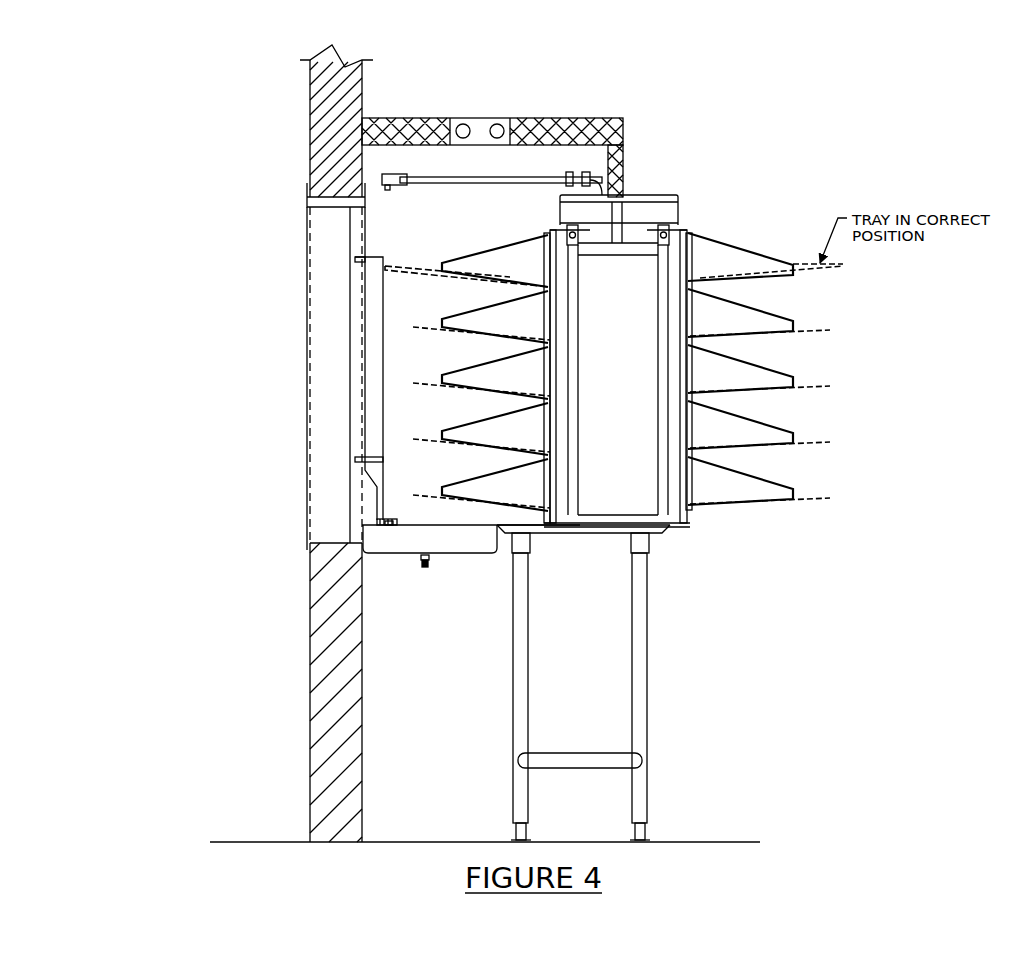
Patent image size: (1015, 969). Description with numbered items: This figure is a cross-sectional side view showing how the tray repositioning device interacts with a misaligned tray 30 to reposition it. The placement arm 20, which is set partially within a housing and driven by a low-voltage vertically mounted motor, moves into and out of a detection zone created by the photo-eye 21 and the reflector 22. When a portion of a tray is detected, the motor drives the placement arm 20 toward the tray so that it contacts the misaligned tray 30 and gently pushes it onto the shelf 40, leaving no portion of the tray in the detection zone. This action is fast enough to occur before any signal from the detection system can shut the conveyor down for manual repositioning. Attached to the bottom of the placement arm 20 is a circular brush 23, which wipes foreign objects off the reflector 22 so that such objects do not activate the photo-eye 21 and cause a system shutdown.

The placement arm 20 is at (380, 388).
The photo-eye 21 is at (490, 173).
The reflector 22 is at (389, 531).
The circular brush 23 is at (376, 519).
The misaligned tray 30 is at (413, 268).
The shelf 40 is at (756, 508).